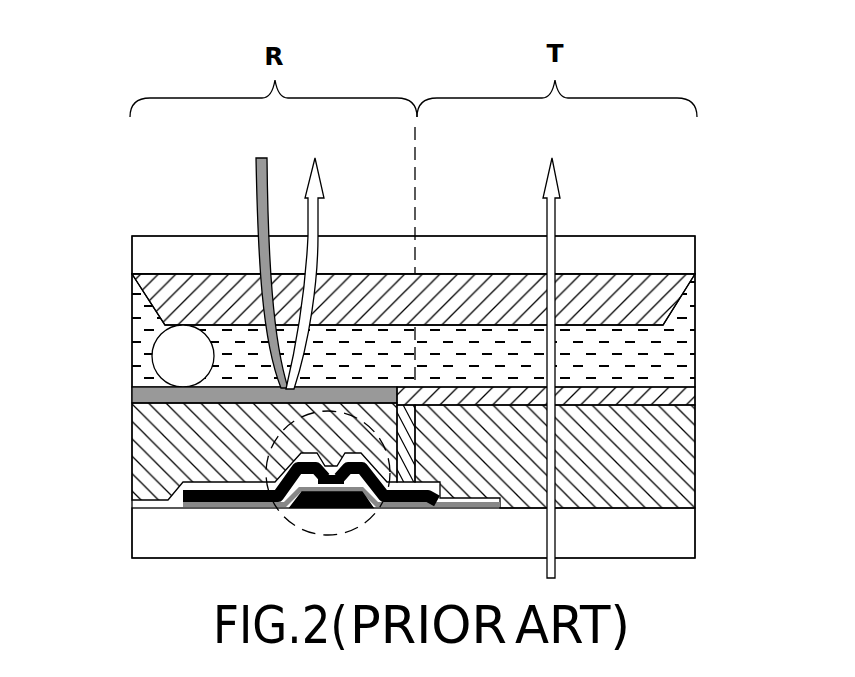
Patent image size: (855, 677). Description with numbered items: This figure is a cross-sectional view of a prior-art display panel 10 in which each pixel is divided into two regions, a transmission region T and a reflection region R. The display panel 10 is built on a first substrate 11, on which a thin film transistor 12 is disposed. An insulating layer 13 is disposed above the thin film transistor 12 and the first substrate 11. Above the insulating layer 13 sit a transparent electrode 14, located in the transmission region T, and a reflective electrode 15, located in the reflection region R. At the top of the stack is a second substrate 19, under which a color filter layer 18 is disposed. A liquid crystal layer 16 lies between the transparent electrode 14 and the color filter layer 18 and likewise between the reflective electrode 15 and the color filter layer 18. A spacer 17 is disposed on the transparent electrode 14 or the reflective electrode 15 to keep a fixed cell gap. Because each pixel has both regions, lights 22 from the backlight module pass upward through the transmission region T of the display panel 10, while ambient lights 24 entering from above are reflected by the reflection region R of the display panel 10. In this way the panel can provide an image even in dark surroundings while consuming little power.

The display panel 10 is at (90, 183).
The first substrate 11 is at (173, 525).
The thin film transistor 12 is at (277, 447).
The insulating layer 13 is at (175, 427).
The transparent electrode 14 is at (657, 396).
The reflective electrode 15 is at (207, 397).
The liquid crystal layer 16 is at (665, 370).
The spacer 17 is at (188, 358).
The color filter layer 18 is at (205, 298).
The second substrate 19 is at (167, 255).
The lights of the backlight module 22 is at (552, 495).
The ambient lights 24 is at (257, 195).